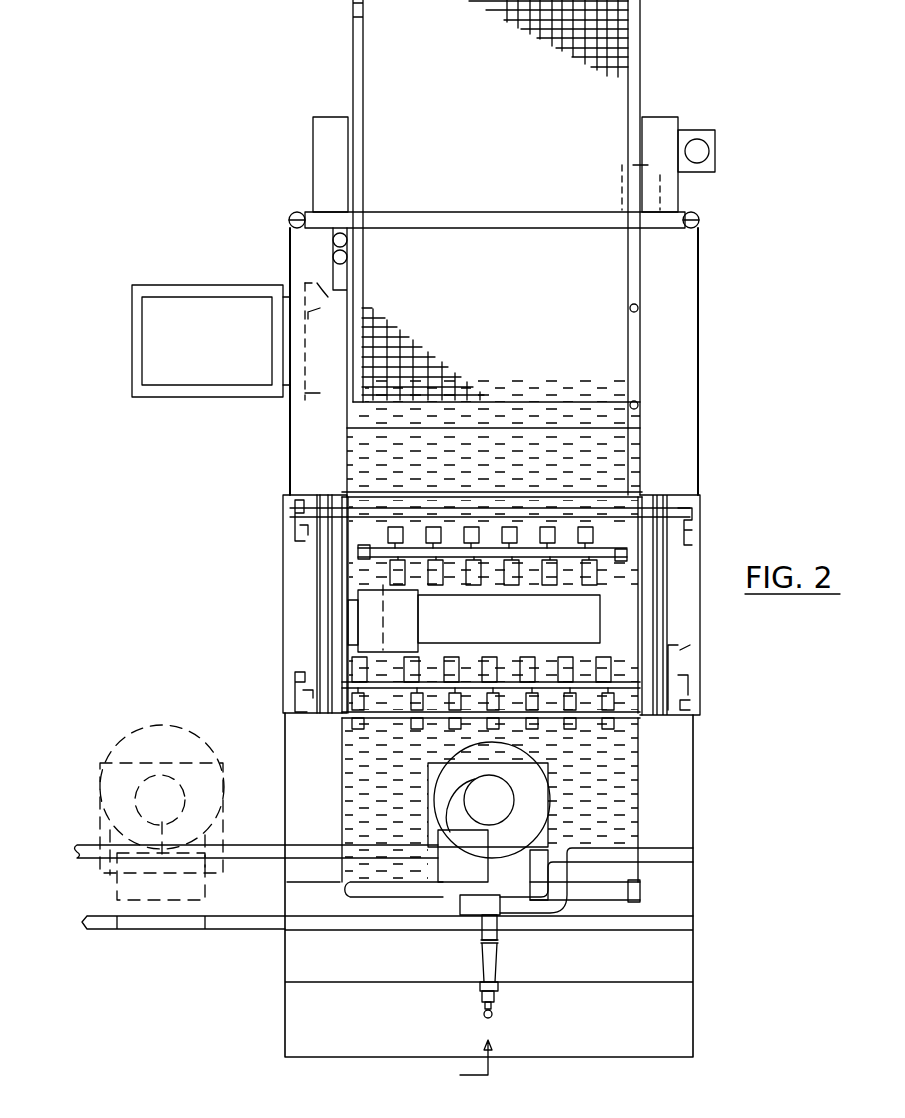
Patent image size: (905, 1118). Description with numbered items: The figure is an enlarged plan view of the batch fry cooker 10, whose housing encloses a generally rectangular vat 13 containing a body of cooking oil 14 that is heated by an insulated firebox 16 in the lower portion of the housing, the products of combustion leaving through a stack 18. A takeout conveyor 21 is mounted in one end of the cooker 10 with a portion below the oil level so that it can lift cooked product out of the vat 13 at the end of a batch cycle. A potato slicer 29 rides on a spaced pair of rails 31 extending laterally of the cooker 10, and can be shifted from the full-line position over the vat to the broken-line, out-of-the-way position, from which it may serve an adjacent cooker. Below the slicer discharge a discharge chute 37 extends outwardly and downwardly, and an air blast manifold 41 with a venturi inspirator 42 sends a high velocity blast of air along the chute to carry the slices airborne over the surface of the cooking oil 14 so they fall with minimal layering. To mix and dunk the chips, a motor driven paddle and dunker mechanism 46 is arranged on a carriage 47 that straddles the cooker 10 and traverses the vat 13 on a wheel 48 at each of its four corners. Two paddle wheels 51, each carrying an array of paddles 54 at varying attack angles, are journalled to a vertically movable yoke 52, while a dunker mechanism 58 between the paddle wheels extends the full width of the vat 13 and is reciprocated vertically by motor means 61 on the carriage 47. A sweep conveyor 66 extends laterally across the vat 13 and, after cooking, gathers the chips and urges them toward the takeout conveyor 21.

The batch fry cooker 10 is at (285, 1005).
The vat 13 is at (345, 455).
The cooking oil 14 is at (498, 475).
The firebox 16 is at (307, 273).
The stack 18 is at (221, 350).
The takeout conveyor 21 is at (499, 126).
The potato slicer 29 is at (530, 807).
The rails 31 is at (100, 862).
The discharge chute 37 is at (548, 790).
The air blast manifold 41 is at (633, 856).
The venturi inspirator 42 is at (495, 964).
The paddle and dunker mechanism 46 is at (285, 578).
The carriage 47 is at (300, 632).
The wheel 48 is at (288, 682).
The paddle wheels 51 is at (568, 540).
The yoke 52 is at (605, 628).
The paddles 54 is at (435, 575).
The dunker mechanism 58 is at (509, 635).
The motor means 61 is at (370, 618).
The sweep conveyor 66 is at (640, 893).